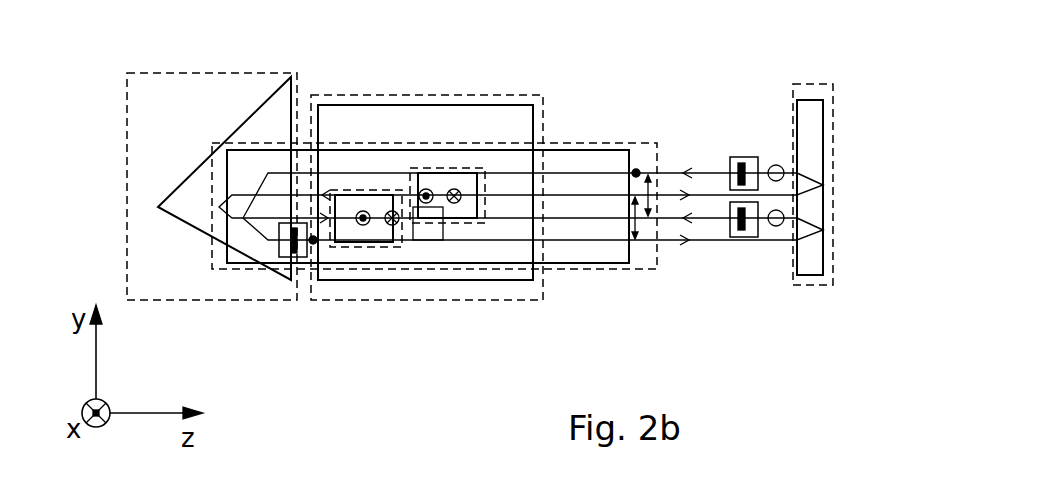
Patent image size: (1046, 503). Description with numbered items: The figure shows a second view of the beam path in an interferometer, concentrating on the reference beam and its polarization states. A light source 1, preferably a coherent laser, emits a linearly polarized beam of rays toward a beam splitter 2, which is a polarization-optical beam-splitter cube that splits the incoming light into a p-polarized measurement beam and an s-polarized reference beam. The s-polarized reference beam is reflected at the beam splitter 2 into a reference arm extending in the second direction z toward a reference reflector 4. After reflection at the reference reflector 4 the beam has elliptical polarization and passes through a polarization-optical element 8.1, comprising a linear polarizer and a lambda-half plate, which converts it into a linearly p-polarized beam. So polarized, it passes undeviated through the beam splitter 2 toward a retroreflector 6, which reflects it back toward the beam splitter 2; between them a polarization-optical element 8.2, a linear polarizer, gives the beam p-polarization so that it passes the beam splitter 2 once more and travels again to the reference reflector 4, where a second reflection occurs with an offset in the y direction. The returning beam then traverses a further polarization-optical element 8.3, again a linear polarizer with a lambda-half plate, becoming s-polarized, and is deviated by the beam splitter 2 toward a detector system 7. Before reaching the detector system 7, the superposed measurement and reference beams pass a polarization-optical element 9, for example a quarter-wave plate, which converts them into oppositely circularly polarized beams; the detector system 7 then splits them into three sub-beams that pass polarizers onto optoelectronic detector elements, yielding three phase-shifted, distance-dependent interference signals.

The light source 1 is at (468, 183).
The beam splitter 2 is at (520, 118).
The reference reflector 4 is at (808, 270).
The retroreflector 6 is at (265, 127).
The detector system 7 is at (373, 233).
The polarization-optical element 8.1 is at (753, 160).
The polarization-optical element 8.2 is at (303, 258).
The polarization-optical element 8.3 is at (752, 235).
The polarization-optical element 9 is at (432, 230).